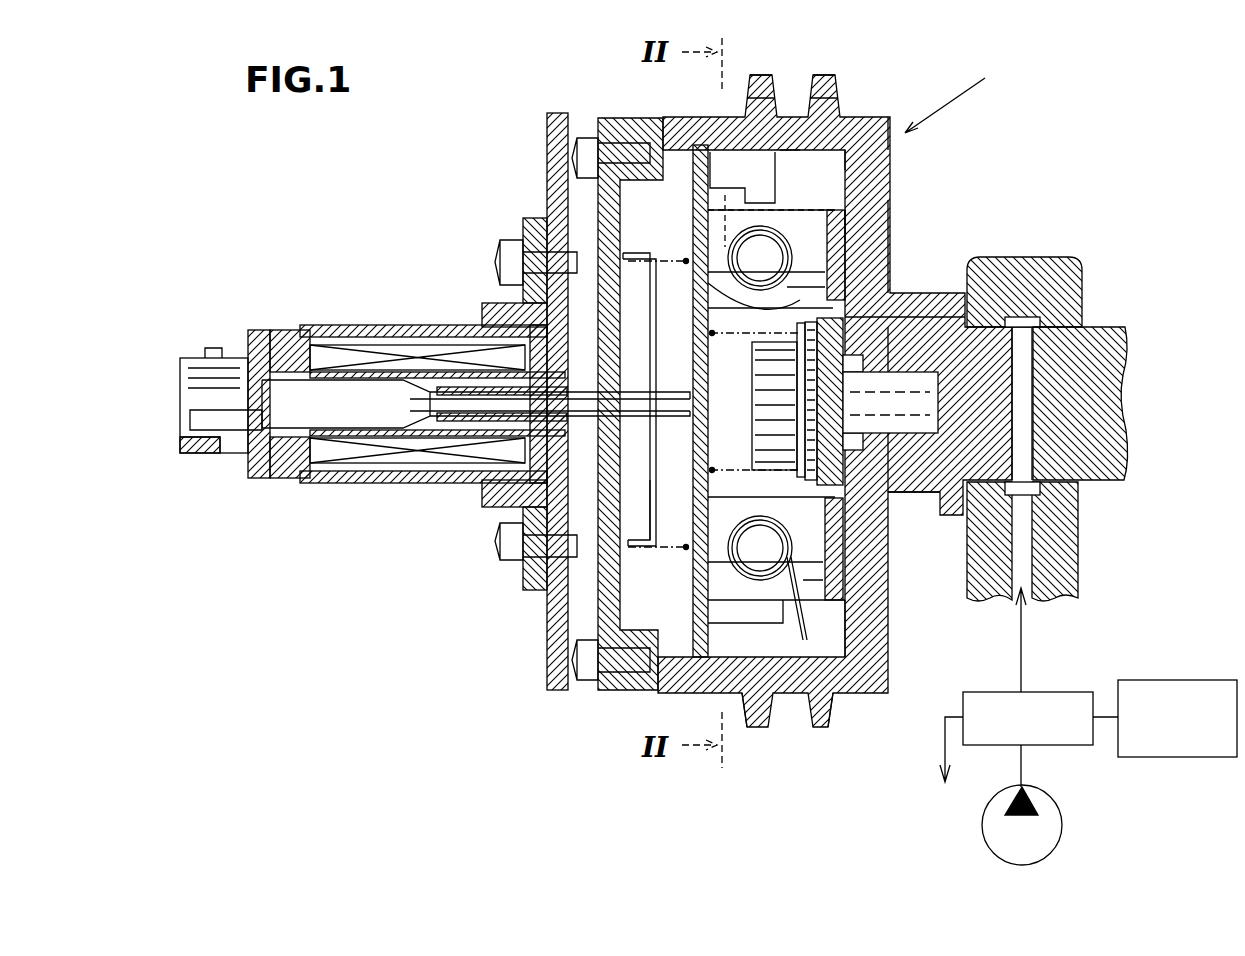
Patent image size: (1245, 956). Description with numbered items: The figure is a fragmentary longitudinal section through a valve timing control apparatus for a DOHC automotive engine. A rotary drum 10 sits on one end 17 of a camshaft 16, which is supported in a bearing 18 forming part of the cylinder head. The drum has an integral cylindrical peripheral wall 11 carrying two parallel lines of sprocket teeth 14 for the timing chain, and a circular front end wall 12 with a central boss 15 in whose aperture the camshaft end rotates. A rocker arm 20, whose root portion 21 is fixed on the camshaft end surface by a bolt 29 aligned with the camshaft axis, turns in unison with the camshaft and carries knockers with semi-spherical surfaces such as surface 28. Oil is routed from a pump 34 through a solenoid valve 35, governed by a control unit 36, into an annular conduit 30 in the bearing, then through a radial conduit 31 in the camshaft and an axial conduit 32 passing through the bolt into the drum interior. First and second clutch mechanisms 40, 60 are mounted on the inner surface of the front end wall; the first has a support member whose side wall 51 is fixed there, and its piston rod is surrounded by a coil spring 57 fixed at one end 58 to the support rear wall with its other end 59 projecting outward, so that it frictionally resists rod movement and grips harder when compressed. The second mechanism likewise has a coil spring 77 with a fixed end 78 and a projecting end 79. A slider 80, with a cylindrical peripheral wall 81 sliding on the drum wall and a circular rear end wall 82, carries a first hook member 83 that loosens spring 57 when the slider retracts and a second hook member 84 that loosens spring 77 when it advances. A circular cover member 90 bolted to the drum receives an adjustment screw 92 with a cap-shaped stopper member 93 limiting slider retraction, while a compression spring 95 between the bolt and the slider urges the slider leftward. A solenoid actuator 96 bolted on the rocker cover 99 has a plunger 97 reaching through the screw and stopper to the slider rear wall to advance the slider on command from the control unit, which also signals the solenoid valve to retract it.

The rotary drum 10 is at (1010, 75).
The cylindrical peripheral wall 11 is at (786, 130).
The circular front end wall 12 is at (880, 157).
The sprocket teeth 14 is at (825, 78).
The central boss 15 is at (930, 296).
The camshaft 16 is at (1100, 335).
The one end of camshaft 17 is at (897, 338).
The bearing 18 is at (1042, 272).
The rocker arm 20 is at (888, 518).
The root portion 21 is at (870, 492).
The semi-spherical surface 28 is at (1040, 510).
The bolt 29 is at (835, 275).
The annular conduit 30 is at (1030, 320).
The radial conduit 31 is at (1030, 460).
The axial conduit 32 is at (990, 407).
The pump 34 is at (1055, 800).
The solenoid valve 35 is at (1048, 692).
The control unit 36 is at (1160, 680).
The first clutch mechanism 40 is at (801, 175).
The side wall 51 is at (853, 225).
The coil spring 57 is at (850, 158).
The one end of coil spring 58 is at (700, 272).
The other end of coil spring 59 is at (730, 190).
The second clutch mechanism 60 is at (820, 705).
The coil spring 77 is at (758, 582).
The one end of coil spring 78 is at (818, 587).
The other end of coil spring 79 is at (850, 665).
The slider 80 is at (655, 490).
The cylindrical peripheral wall 81 is at (760, 165).
The circular rear end wall 82 is at (694, 633).
The first hook member 83 is at (770, 158).
The second hook member 84 is at (755, 705).
The circular cover member 90 is at (600, 208).
The adjustment screw 92 is at (530, 482).
The cap-shaped stopper member 93 is at (530, 506).
The compression spring 95 is at (690, 552).
The solenoid actuator 96 is at (340, 307).
The plunger 97 is at (465, 405).
The rocker cover 99 is at (556, 152).